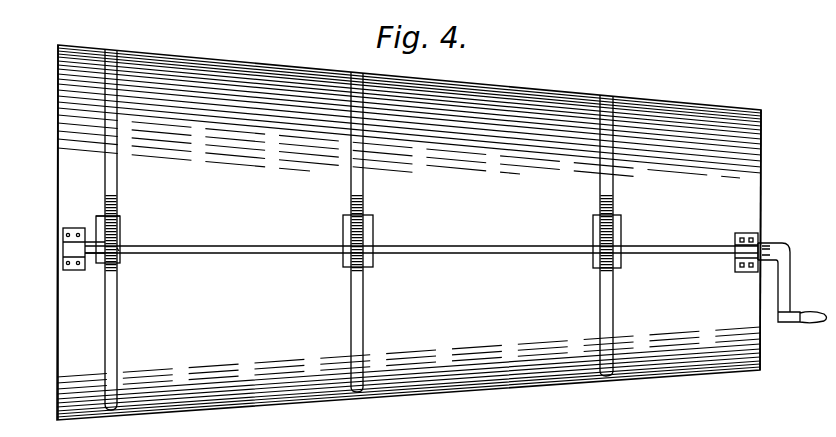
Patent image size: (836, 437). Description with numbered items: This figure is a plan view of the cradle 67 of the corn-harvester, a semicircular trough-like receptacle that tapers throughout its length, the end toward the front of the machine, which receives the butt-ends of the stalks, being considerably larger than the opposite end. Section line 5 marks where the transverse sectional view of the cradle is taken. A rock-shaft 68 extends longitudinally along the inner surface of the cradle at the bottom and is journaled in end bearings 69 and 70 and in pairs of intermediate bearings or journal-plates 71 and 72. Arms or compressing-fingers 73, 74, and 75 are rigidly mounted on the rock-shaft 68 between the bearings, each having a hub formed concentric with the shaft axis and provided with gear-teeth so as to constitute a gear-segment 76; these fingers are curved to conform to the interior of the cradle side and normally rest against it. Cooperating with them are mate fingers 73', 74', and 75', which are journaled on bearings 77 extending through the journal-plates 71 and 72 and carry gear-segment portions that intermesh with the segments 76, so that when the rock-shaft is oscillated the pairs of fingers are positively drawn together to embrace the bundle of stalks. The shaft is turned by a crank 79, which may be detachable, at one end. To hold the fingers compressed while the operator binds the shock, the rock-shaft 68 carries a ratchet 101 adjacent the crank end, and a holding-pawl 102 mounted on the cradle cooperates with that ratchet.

The section line 5 is at (122, 436).
The cradle 67 is at (68, 200).
The rock-shaft 68 is at (283, 250).
The bearing 69 is at (63, 261).
The bearing 70 is at (752, 233).
The intermediate bearing 71 is at (97, 218).
The intermediate bearing 72 is at (124, 221).
The compressing-finger 73 is at (133, 230).
The mate finger 73' is at (138, 113).
The compressing-finger 74 is at (376, 232).
The mate finger 74' is at (378, 132).
The compressing-finger 75 is at (635, 235).
The mate finger 75' is at (633, 144).
The gear-segment 76 is at (118, 248).
The bearing 77 is at (120, 234).
The crank 79 is at (789, 283).
The ratchet 101 is at (770, 242).
The holding-pawl 102 is at (762, 272).